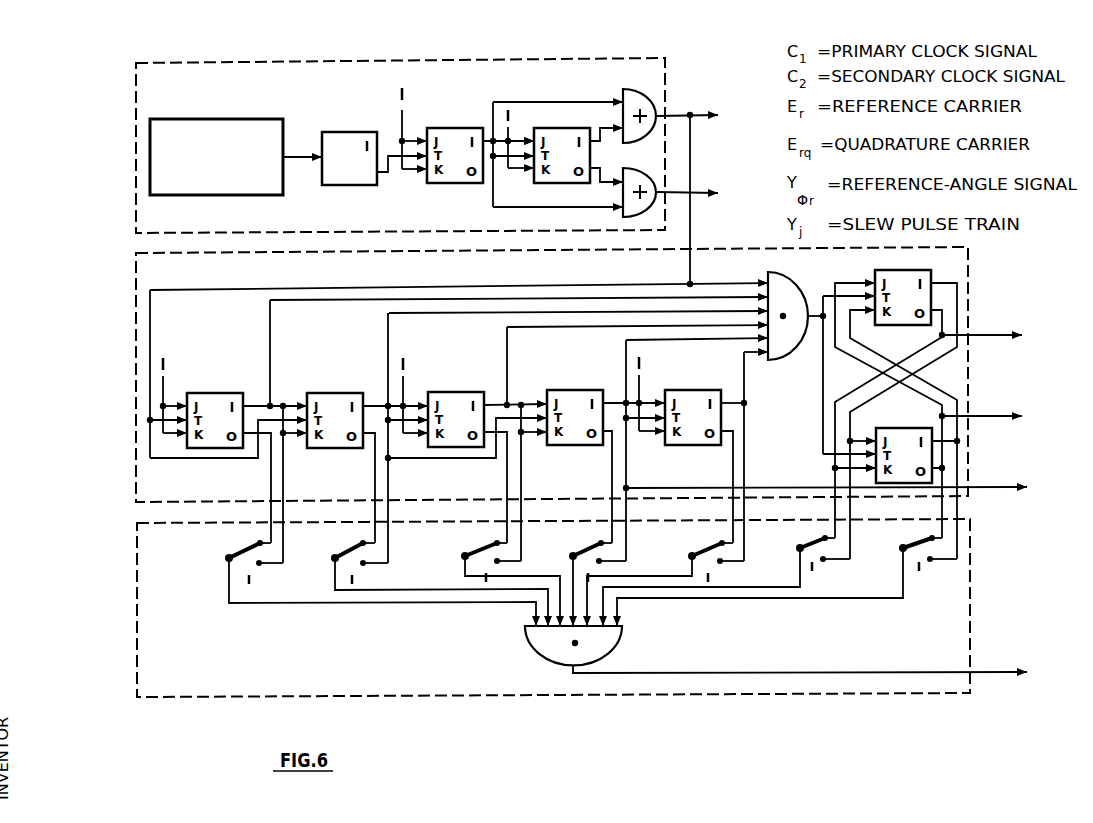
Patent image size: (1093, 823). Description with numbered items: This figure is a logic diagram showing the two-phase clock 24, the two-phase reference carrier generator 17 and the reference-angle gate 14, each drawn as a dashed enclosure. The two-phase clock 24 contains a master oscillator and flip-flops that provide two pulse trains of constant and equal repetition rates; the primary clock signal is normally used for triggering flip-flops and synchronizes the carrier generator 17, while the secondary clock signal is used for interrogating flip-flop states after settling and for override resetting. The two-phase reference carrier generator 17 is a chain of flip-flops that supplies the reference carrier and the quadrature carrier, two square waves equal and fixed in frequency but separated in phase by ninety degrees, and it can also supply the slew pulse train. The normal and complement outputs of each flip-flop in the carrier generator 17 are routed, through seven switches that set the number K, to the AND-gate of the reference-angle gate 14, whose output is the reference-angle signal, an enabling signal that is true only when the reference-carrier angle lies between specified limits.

The two-phase clock 24 is at (170, 88).
The two-phase reference-carrier generator 17 is at (153, 471).
The reference-angle gate 14 is at (206, 679).